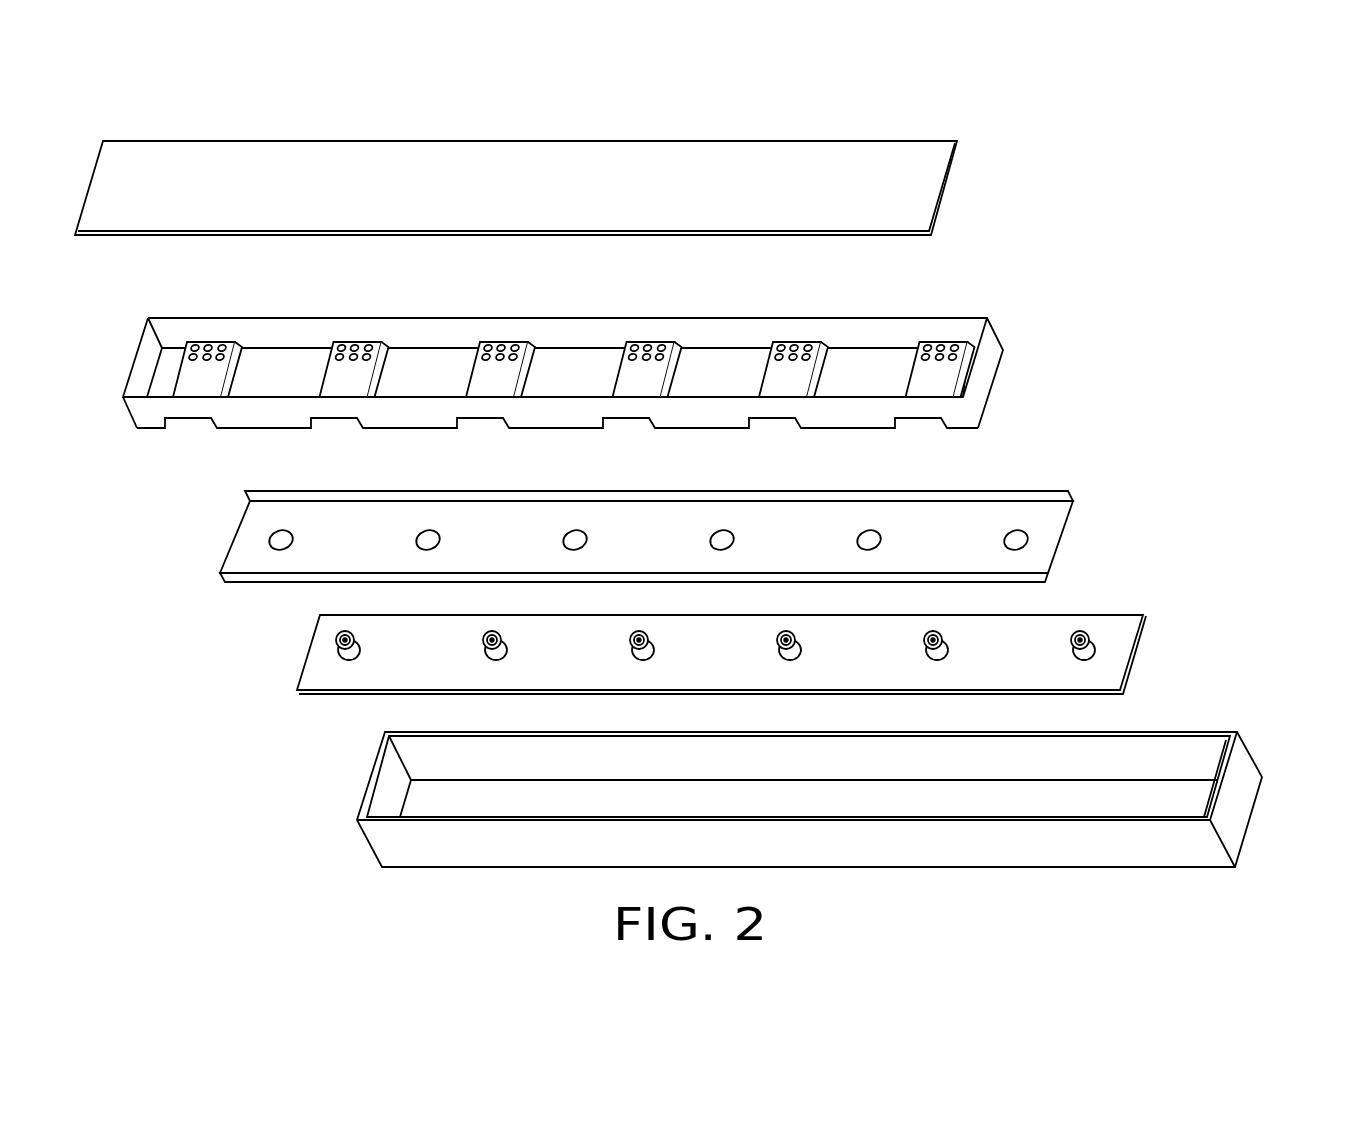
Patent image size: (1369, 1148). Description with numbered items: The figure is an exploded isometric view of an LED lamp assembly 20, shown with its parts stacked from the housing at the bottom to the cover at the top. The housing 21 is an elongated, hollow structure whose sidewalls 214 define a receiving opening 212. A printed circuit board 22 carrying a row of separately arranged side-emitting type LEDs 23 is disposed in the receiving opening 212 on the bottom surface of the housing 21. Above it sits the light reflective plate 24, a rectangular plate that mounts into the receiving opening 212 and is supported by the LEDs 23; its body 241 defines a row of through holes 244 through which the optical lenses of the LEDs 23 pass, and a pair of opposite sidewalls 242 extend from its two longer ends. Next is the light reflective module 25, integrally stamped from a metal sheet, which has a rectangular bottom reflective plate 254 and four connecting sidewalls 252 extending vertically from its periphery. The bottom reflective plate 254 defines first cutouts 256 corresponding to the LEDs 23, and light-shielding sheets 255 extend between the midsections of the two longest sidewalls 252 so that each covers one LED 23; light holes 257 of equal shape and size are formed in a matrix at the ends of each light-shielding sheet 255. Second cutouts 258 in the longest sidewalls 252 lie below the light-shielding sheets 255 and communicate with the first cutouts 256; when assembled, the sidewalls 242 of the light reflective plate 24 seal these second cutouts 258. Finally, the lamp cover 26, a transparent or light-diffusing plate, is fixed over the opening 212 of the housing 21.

The LED lamp assembly 20 is at (715, 102).
The housing 21 is at (849, 776).
The receiving opening 212 is at (1182, 764).
The sidewalls of the housing 214 is at (1164, 732).
The printed circuit board 22 is at (759, 627).
The side-emitting type LEDs 23 is at (1096, 650).
The light reflective plate 24 is at (698, 507).
The main body of fixing plate 241 is at (948, 538).
The sidewalls of the light reflective plate 242 is at (698, 494).
The through holes 244 is at (868, 540).
The light reflective module 25 is at (614, 369).
The connecting sidewalls 252 is at (888, 333).
The bottom reflective plate 254 is at (557, 370).
The light-shielding sheets 255 is at (800, 327).
The first cutouts 256 is at (820, 382).
The light holes 257 is at (647, 345).
The second cutouts 258 is at (773, 425).
The lamp cover 26 is at (905, 182).